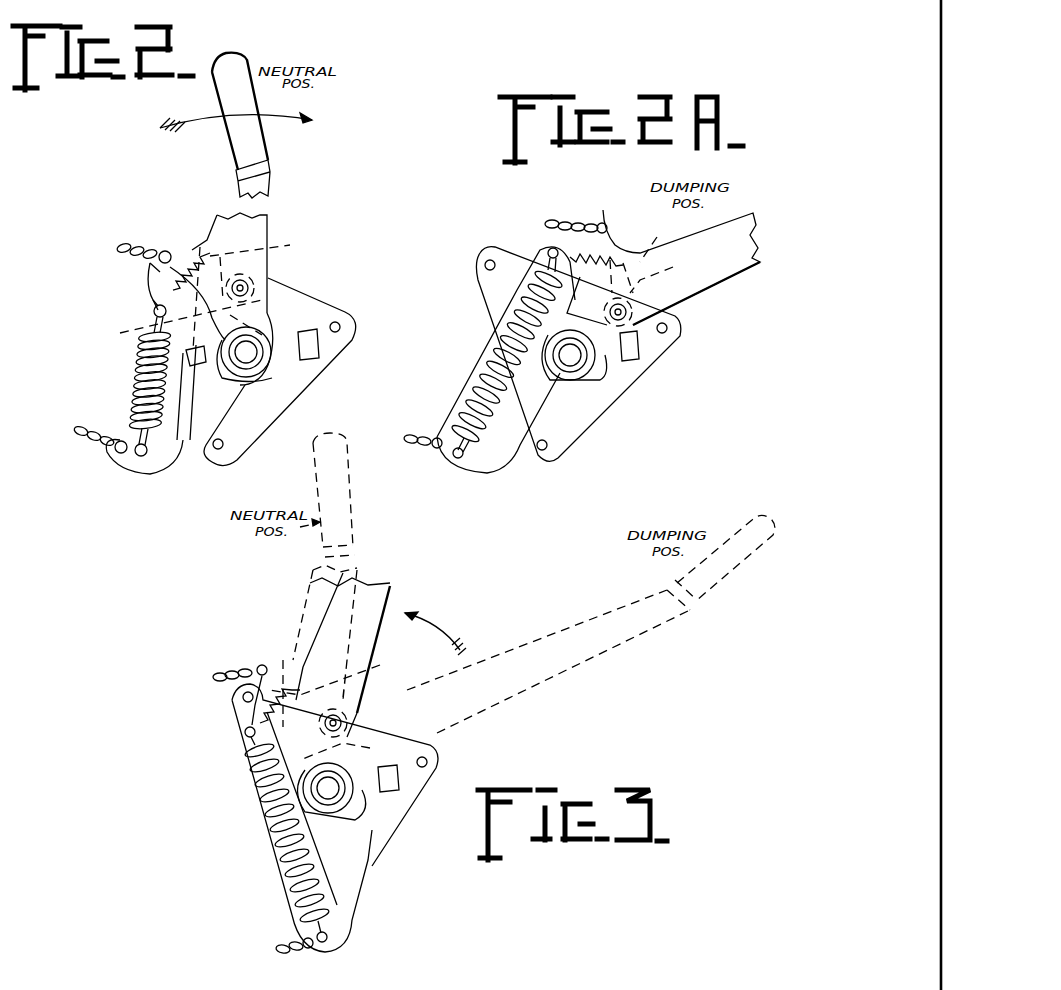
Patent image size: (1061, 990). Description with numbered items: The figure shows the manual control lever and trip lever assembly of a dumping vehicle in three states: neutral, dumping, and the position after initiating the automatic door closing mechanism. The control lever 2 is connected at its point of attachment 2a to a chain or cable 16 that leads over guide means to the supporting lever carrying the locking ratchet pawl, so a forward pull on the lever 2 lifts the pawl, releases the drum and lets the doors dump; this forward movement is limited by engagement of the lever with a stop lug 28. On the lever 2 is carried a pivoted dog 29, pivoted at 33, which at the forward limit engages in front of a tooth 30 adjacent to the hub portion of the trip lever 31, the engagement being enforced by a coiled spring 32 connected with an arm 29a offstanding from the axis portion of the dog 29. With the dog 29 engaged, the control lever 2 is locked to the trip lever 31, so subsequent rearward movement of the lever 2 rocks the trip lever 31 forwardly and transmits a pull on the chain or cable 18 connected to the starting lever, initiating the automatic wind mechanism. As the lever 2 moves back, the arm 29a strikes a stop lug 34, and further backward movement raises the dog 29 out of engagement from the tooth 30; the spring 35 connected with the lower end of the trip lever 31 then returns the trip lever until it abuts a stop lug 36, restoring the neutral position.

In FIG. 2, the control lever 2 is at (262, 230).
In FIG. 2A, the control lever 2 is at (750, 218).
In FIG. 3, the control lever 2 is at (348, 496).
In FIG. 2, the point of attachment 2a is at (162, 250).
In FIG. 2A, the point of attachment 2a is at (596, 224).
In FIG. 3, the point of attachment 2a is at (258, 666).
In FIG. 2, the chain or cable 16 is at (136, 250).
In FIG. 2A, the chain or cable 16 is at (550, 220).
In FIG. 3, the chain or cable 16 is at (224, 672).
In FIG. 2, the chain or cable 18 is at (80, 440).
In FIG. 2A, the chain or cable 18 is at (410, 435).
In FIG. 3, the chain or cable 18 is at (287, 956).
In FIG. 2, the stop lug 28 is at (322, 340).
In FIG. 2A, the stop lug 28 is at (642, 350).
In FIG. 3, the stop lug 28 is at (405, 785).
In FIG. 2, the pivoted dog 29 is at (172, 329).
In FIG. 2A, the pivoted dog 29 is at (667, 275).
In FIG. 3, the pivoted dog 29 is at (350, 749).
In FIG. 2, the arm 29a is at (269, 238).
In FIG. 2A, the arm 29a is at (676, 236).
In FIG. 3, the arm 29a is at (347, 673).
In FIG. 2, the tooth 30 is at (268, 312).
In FIG. 2A, the tooth 30 is at (510, 298).
In FIG. 3, the tooth 30 is at (262, 790).
In FIG. 2, the trip lever 31 is at (182, 462).
In FIG. 2A, the trip lever 31 is at (543, 413).
In FIG. 3, the trip lever 31 is at (358, 897).
In FIG. 2, the coiled spring 32 is at (217, 257).
In FIG. 2A, the coiled spring 32 is at (605, 262).
In FIG. 3, the coiled spring 32 is at (250, 730).
In FIG. 2, the pivot of dog 33 is at (252, 282).
In FIG. 2A, the pivot of dog 33 is at (632, 310).
In FIG. 3, the pivot of dog 33 is at (347, 718).
In FIG. 2, the stop lug 34 is at (197, 256).
In FIG. 2A, the stop lug 34 is at (530, 260).
In FIG. 3, the stop lug 34 is at (283, 685).
In FIG. 2, the spring 35 is at (138, 396).
In FIG. 2A, the spring 35 is at (487, 365).
In FIG. 3, the spring 35 is at (290, 860).
In FIG. 2, the stop lug 36 is at (190, 360).
In FIG. 2A, the stop lug 36 is at (484, 341).
In FIG. 3, the stop lug 36 is at (235, 790).